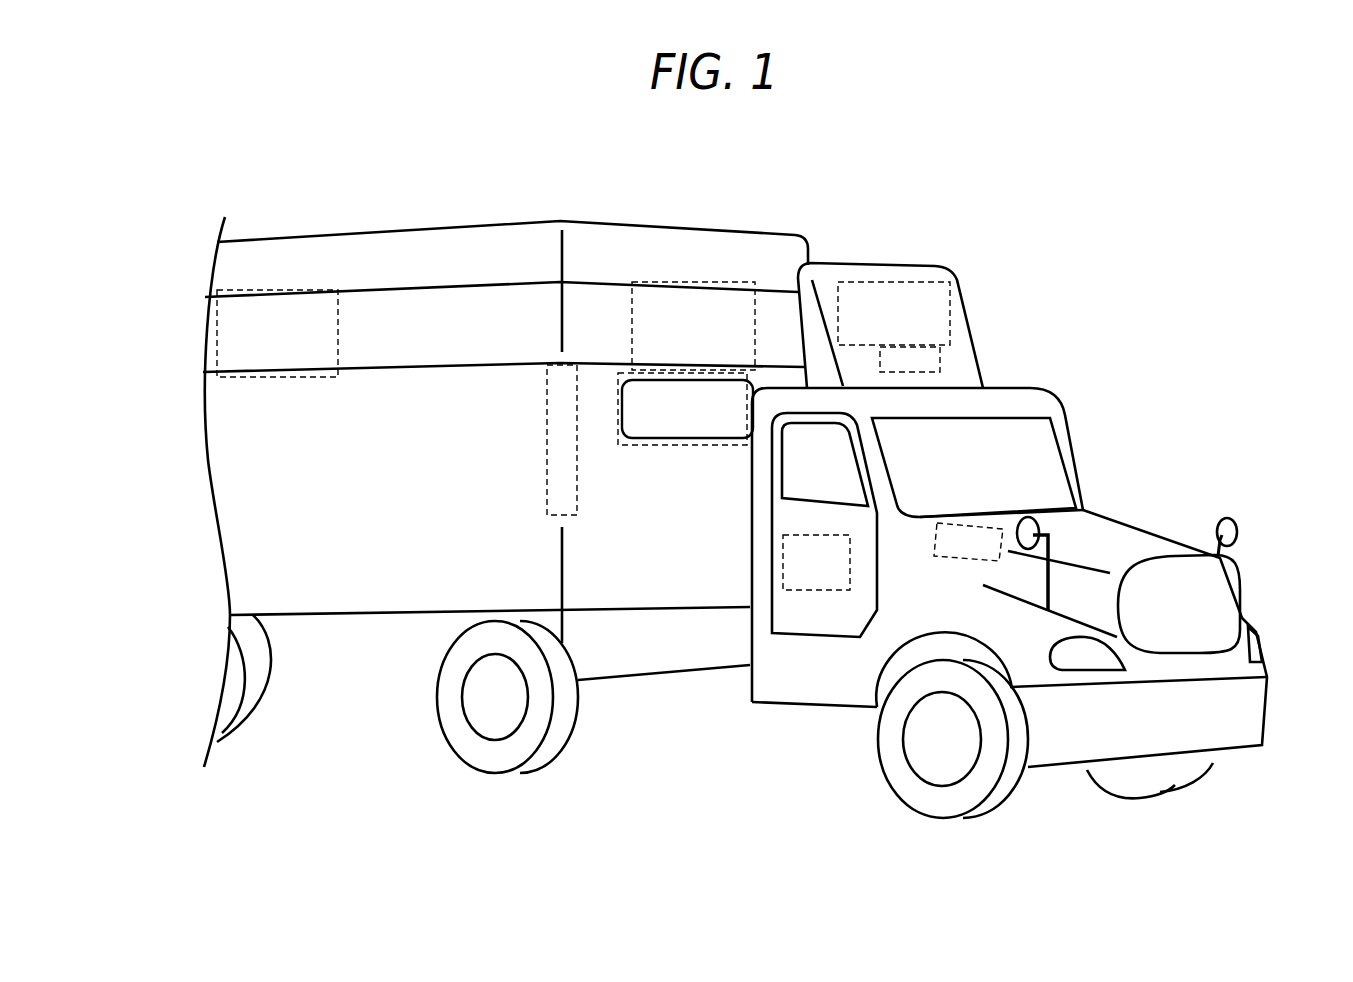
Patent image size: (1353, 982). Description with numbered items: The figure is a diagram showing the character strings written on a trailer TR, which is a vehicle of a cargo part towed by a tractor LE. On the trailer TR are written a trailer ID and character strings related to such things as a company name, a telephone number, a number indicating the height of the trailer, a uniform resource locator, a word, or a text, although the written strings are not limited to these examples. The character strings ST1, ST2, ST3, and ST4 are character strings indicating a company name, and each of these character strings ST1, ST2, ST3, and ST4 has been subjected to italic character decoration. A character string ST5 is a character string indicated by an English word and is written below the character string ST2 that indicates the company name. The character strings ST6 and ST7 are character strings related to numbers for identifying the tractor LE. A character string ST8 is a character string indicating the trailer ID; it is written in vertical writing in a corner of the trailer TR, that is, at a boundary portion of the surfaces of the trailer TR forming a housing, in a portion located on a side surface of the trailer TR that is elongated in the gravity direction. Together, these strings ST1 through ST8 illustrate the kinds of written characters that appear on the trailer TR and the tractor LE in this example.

The trailer TR is at (440, 223).
The tractor LE is at (1152, 519).
The character string ST1 is at (215, 333).
The character string ST2 is at (700, 282).
The character string ST3 is at (930, 282).
The character string ST4 is at (852, 555).
The character string ST5 is at (665, 447).
The character string ST6 is at (943, 360).
The character string ST7 is at (987, 532).
The character string ST8 is at (547, 392).